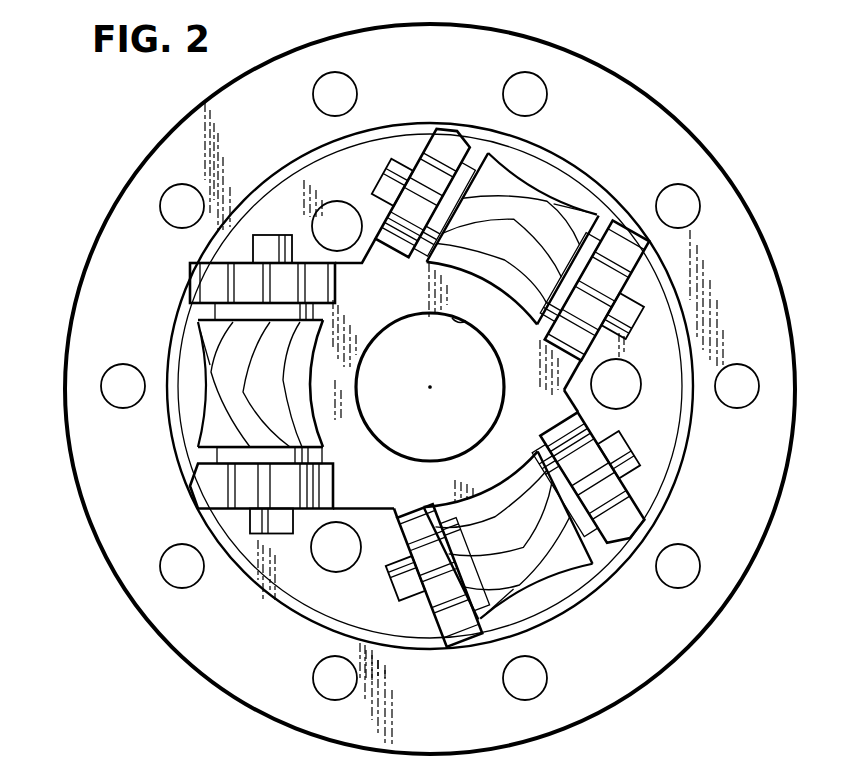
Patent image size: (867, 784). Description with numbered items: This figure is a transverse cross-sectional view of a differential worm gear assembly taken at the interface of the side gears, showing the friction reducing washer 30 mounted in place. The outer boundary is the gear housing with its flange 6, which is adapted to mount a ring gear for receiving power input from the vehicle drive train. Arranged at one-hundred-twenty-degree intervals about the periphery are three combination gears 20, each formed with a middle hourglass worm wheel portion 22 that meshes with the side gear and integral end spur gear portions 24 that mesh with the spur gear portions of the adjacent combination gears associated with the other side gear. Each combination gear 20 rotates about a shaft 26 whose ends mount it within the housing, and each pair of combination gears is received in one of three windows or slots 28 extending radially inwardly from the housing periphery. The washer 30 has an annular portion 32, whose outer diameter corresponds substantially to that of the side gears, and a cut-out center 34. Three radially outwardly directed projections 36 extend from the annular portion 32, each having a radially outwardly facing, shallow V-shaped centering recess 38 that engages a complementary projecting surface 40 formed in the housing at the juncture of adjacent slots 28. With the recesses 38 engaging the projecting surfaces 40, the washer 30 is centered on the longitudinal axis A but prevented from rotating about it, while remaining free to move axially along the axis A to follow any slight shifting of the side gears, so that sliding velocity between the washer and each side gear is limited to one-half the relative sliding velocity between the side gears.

The flange 6 is at (777, 280).
The combination gear 20 is at (556, 200).
The hourglass worm wheel portion 22 is at (542, 240).
The spur gear portion 24 is at (433, 152).
The shaft 26 is at (623, 457).
The window or slot 28 is at (544, 182).
The friction reducing washer 30 is at (372, 340).
The annular portion 32 is at (517, 407).
The cut-out center 34 is at (458, 323).
The projection 36 is at (386, 248).
The V-shaped centering recess 38 is at (345, 270).
The projecting surface 40 is at (668, 349).
The longitudinal axis A is at (430, 383).